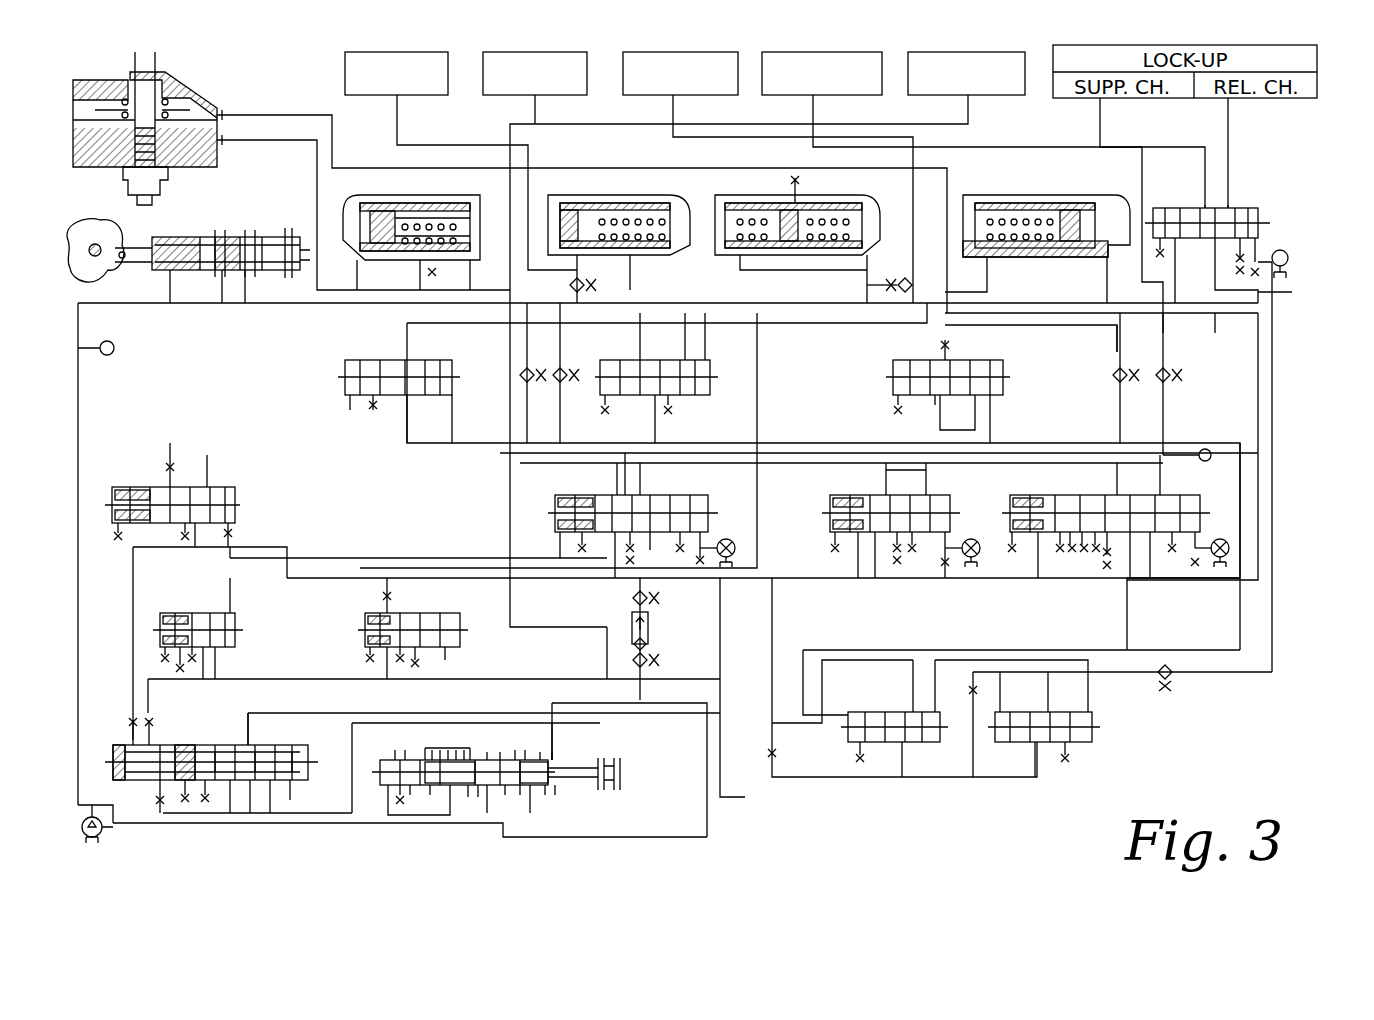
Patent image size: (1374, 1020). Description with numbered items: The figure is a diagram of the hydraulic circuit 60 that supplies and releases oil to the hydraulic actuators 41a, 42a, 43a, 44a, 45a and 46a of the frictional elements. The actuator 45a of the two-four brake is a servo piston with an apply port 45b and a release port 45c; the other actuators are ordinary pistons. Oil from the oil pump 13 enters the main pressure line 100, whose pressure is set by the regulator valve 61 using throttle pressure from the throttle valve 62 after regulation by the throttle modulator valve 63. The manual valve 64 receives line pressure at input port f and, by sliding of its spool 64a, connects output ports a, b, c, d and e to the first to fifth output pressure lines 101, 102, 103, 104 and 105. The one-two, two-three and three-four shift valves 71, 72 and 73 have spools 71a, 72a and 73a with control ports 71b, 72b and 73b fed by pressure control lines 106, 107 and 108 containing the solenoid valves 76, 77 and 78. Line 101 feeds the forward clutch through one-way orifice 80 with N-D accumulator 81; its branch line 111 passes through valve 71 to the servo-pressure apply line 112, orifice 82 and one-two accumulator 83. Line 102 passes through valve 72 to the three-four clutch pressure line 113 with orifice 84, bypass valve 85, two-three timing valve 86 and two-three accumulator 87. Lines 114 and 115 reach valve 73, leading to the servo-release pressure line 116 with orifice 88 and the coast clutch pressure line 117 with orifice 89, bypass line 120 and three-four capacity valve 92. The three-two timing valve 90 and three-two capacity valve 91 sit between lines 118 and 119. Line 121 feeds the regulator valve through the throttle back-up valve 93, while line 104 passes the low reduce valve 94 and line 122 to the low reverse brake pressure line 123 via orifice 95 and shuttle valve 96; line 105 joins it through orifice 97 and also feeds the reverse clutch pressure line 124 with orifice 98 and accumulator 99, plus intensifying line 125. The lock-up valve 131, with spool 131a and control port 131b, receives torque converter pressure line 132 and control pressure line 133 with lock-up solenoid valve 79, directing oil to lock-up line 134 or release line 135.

The oil pump 13 is at (102, 833).
The hydraulic actuator 41a is at (526, 52).
The hydraulic actuator 42a is at (666, 52).
The hydraulic actuator 43a is at (796, 52).
The hydraulic actuator 44a is at (399, 52).
The servo piston 45a is at (190, 80).
The apply port 45b is at (224, 144).
The release port 45c is at (224, 114).
The hydraulic actuator 46a is at (991, 52).
The hydraulic circuit 60 is at (1318, 163).
The regulator valve 61 is at (202, 737).
The throttle valve 62 is at (248, 240).
The throttle modulator valve 63 is at (200, 495).
The manual valve 64 is at (620, 771).
The spool 64a is at (584, 789).
The 1–2 shift valve 71 is at (556, 502).
The spool 71a is at (672, 500).
The control port 71b is at (703, 498).
The 2–3 shift valve 72 is at (842, 502).
The spool 72a is at (935, 498).
The control port 72b is at (949, 500).
The 3–4 shift valve 73 is at (1028, 500).
The spool 73a is at (1185, 498).
The control port 73b is at (1195, 500).
The first solenoid valve 76 is at (726, 539).
The second solenoid valve 77 is at (971, 539).
The third solenoid valve 78 is at (1220, 539).
The lock-up solenoid valve 79 is at (1288, 260).
The one-way orifice 80 is at (892, 288).
The N-D accumulator 81 is at (861, 204).
The one-way orifice 82 is at (520, 384).
The 1–2 accumulator 83 is at (368, 204).
The one-way orifice 84 is at (562, 385).
The bypass valve 85 is at (718, 372).
The 2–3 timing valve 86 is at (437, 365).
The 2–3 accumulator 87 is at (1076, 190).
The one-way orifice 88 is at (1120, 368).
The one-way orifice 89 is at (1164, 368).
The 3–2 timing valve 90 is at (864, 711).
The 3–2 capacity valve 91 is at (1090, 723).
The 3–4 capacity valve 92 is at (1006, 380).
The throttle back-up valve 93 is at (234, 628).
The low reduce valve 94 is at (360, 628).
The one-way orifice 95 is at (651, 600).
The shuttle valve 96 is at (650, 630).
The one-way orifice 97 is at (651, 664).
The one-way orifice 98 is at (589, 280).
The accumulator 99 is at (658, 202).
The main pressure line 100 is at (398, 829).
The first pressure output line 101 is at (528, 114).
The second pressure output line 102 is at (720, 803).
The third pressure output line 103 is at (484, 685).
The fourth pressure output line 104 is at (392, 694).
The fifth pressure output line 105 is at (558, 731).
The first pressure control line 106 is at (663, 639).
The second pressure control line 107 is at (948, 584).
The third pressure control line 108 is at (1195, 580).
The pressure line 111 is at (606, 570).
The servo-pressure apply line 112 is at (256, 143).
The 3–4 clutch pressure line 113 is at (808, 114).
The pressure line 114 is at (1194, 449).
The pressure line 115 is at (1150, 580).
The servo-release pressure line 116 is at (284, 121).
The coast clutch pressure line 117 is at (664, 114).
The pressure line 118 is at (864, 779).
The pressure line 119 is at (1114, 679).
The bypass pressure line 120 is at (1059, 335).
The pressure line 121 is at (317, 683).
The pressure line 122 is at (362, 558).
The low reverse brake pressure line 123 is at (956, 122).
The reverse clutch pressure line 124 is at (390, 122).
The pressure line 125 is at (350, 755).
The lock-up valve 131 is at (1250, 205).
The spool 131a is at (1196, 206).
The control port 131b is at (1260, 230).
The torque converter pressure line 132 is at (311, 712).
The control pressure line 133 is at (1198, 313).
The pressure line 134 is at (1174, 137).
The pressure line 135 is at (1228, 137).
The first output port a is at (488, 759).
The second output port b is at (514, 790).
The third output port c is at (450, 757).
The fourth output port d is at (425, 746).
The fifth output port e is at (548, 757).
The input port f is at (472, 790).